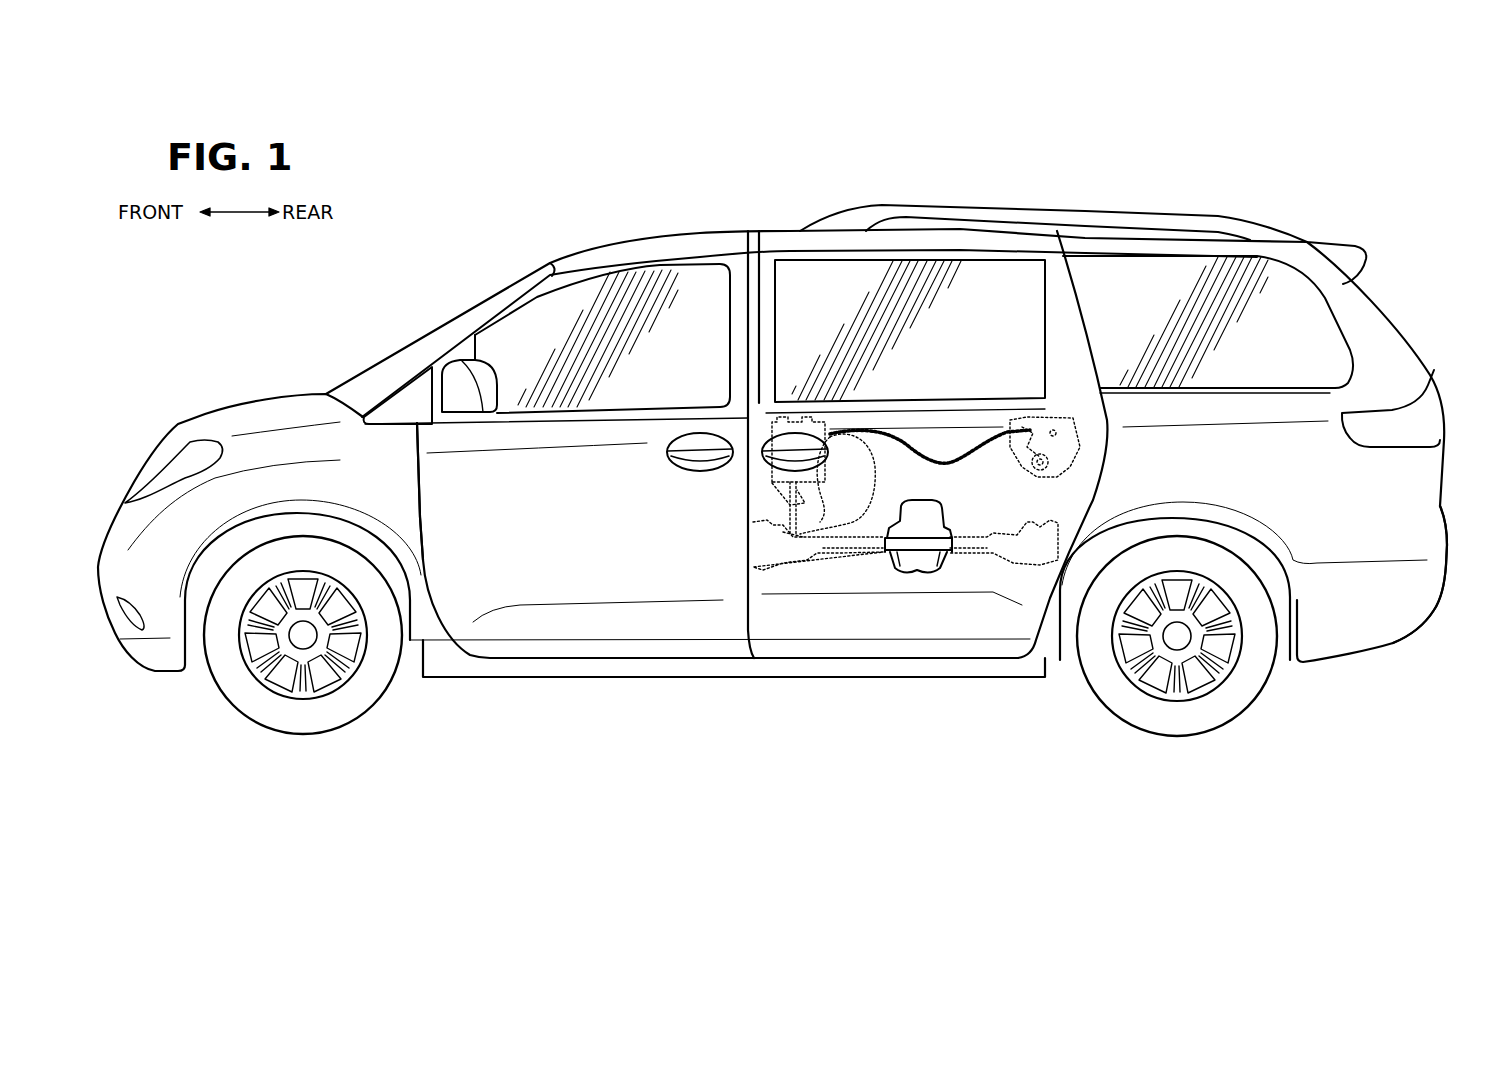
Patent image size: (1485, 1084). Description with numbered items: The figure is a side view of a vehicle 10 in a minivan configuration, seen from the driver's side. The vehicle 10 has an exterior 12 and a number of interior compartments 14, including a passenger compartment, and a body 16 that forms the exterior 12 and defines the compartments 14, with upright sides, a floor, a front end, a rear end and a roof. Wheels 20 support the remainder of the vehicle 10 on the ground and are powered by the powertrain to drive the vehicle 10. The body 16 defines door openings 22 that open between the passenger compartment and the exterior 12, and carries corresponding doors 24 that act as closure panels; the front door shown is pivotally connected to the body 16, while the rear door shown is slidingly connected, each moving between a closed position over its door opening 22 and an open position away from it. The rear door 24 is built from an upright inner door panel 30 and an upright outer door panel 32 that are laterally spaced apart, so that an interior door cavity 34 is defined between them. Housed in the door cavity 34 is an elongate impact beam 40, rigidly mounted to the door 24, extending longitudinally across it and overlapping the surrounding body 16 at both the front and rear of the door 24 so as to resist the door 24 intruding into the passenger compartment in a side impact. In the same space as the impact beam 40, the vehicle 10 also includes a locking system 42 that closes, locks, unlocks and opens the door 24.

The vehicle 10 is at (680, 236).
The exterior 12 is at (822, 344).
The interior compartments 14 is at (822, 286).
The body 16 is at (1422, 470).
The wheels 20 is at (380, 700).
The door openings 22 is at (480, 483).
The doors 24 is at (455, 510).
The inner door panel 30 is at (890, 553).
The outer door panel 32 is at (893, 646).
The interior door cavity 34 is at (902, 556).
The impact beam 40 is at (928, 556).
The locking system 42 is at (945, 434).